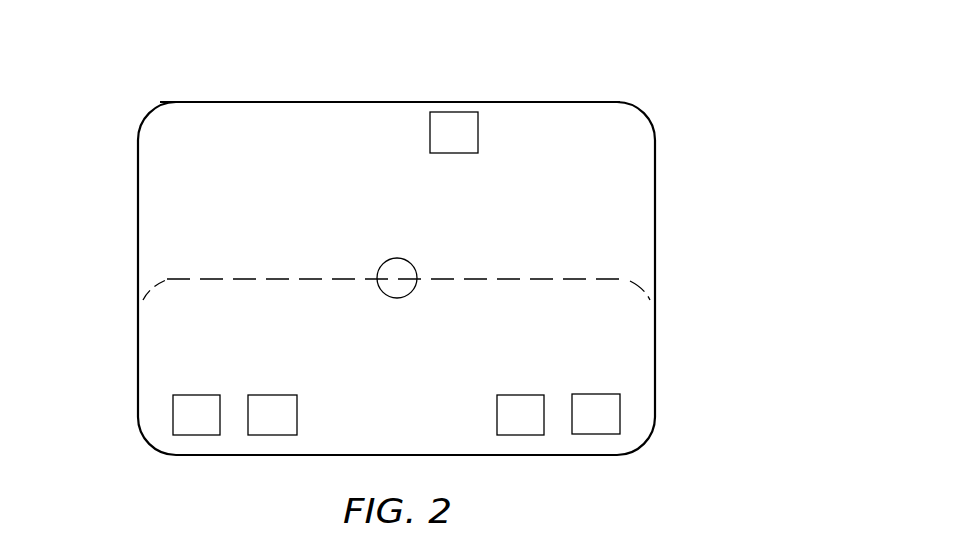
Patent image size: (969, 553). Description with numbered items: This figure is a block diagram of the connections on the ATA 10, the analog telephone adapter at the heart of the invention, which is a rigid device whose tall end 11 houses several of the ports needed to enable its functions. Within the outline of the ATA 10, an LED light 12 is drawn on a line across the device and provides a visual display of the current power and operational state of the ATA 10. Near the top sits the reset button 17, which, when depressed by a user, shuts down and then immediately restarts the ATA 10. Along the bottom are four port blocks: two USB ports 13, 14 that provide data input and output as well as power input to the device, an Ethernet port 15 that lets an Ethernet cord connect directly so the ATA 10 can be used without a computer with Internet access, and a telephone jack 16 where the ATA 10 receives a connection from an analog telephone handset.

The ATA 10 is at (108, 82).
The tall end 11 is at (248, 130).
The LED light 12 is at (379, 271).
The USB port 13 is at (200, 435).
The USB port 14 is at (273, 435).
The Ethernet port 15 is at (522, 435).
The telephone jack 16 is at (595, 435).
The reset button 17 is at (450, 112).